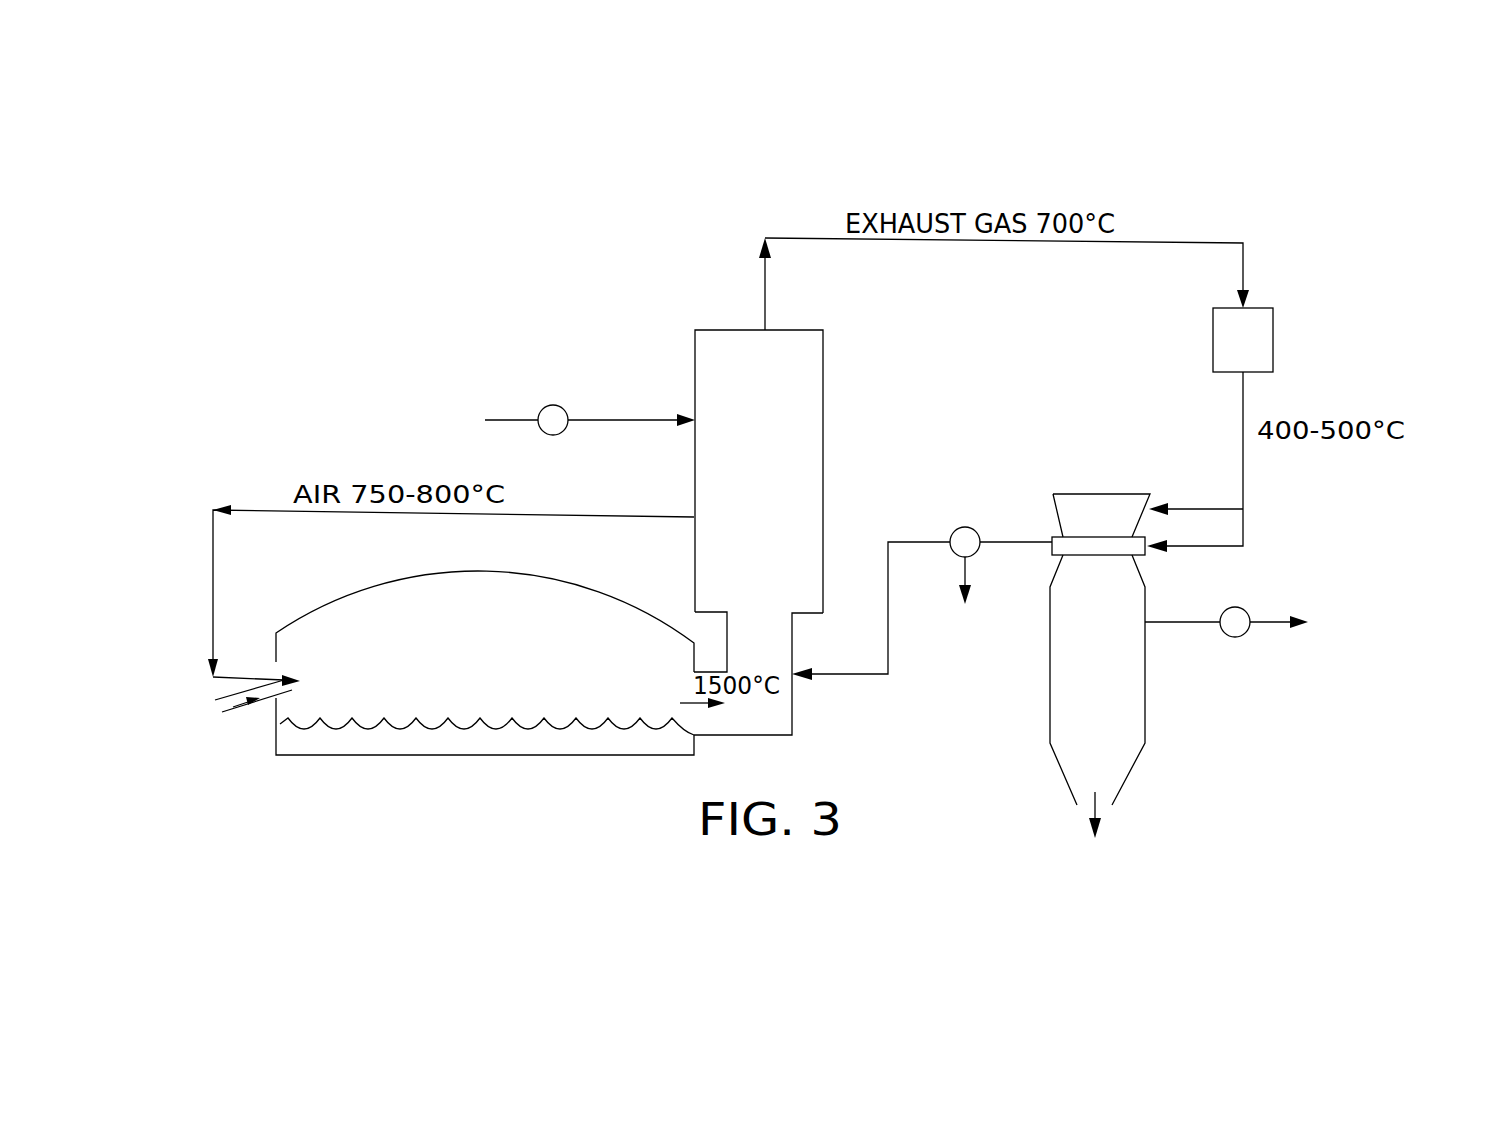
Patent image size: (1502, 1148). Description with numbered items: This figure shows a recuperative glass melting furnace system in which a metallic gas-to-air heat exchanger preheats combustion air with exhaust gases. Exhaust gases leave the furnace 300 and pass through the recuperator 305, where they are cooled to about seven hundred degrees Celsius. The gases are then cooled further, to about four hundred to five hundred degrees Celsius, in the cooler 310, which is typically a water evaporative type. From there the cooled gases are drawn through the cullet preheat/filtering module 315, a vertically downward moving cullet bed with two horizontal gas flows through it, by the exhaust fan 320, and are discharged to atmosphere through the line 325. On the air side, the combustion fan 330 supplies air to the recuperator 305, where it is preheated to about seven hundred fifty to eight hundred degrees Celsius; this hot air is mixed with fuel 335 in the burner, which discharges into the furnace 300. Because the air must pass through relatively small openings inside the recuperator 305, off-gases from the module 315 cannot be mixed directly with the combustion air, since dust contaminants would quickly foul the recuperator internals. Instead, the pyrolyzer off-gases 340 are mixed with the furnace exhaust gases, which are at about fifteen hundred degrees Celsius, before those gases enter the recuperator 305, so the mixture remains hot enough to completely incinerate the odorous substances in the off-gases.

The furnace 300 is at (316, 607).
The recuperator 305 is at (810, 416).
The cooler 310 is at (1263, 331).
The cullet preheat/filtering module 315 is at (1050, 667).
The exhaust fan 320 is at (1245, 611).
The line 325 is at (1260, 625).
The combustion fan 330 is at (560, 408).
The fuel 335 is at (230, 718).
The pyrolyzer off-gases 340 is at (853, 676).